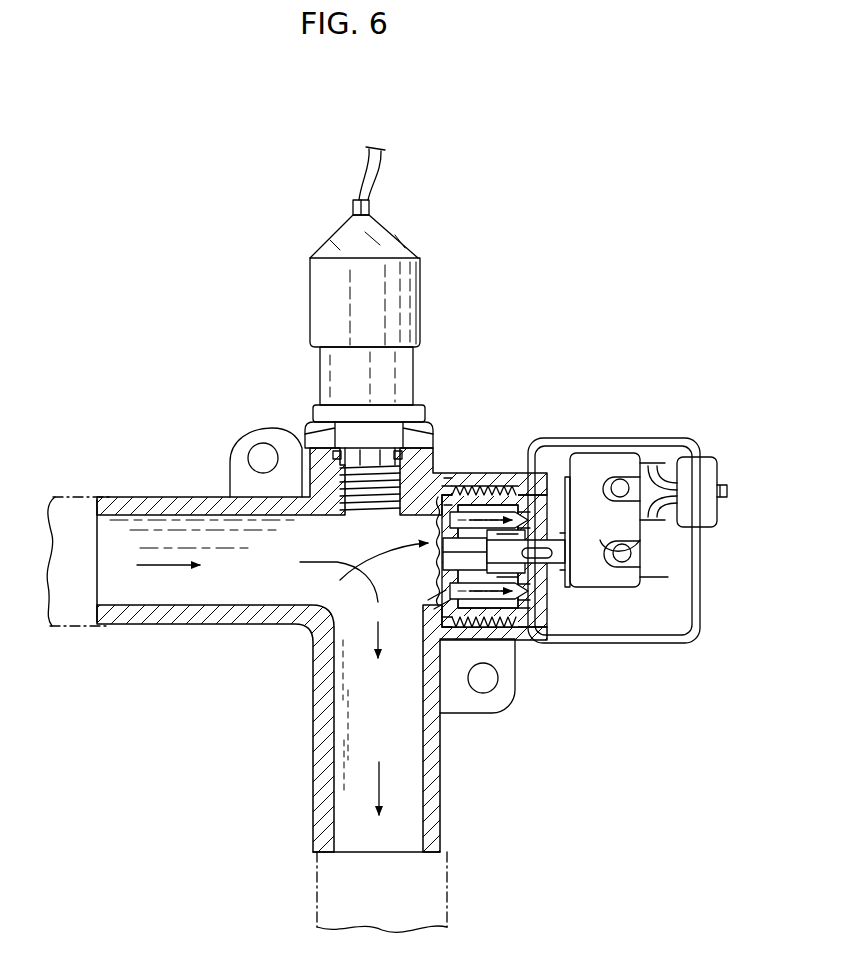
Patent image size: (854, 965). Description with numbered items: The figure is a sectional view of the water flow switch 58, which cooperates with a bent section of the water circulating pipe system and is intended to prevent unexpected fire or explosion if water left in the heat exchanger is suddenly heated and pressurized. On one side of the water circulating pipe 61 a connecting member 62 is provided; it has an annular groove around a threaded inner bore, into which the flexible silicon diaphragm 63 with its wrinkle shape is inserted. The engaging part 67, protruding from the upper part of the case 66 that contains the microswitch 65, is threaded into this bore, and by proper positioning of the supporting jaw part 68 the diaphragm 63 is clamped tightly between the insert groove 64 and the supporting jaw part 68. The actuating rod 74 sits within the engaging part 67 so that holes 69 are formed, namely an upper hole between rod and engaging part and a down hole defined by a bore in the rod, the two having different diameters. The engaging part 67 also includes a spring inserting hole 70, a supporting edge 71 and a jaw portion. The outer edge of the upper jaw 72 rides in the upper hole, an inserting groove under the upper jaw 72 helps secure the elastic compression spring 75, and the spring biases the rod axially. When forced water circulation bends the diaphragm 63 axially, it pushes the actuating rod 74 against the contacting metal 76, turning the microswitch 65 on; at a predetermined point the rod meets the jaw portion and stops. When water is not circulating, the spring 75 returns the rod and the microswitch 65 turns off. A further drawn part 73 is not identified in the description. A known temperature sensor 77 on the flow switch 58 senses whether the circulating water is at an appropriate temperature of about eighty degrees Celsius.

The water flow switch 58 is at (473, 485).
The water circulating pipe 61 is at (447, 810).
The connecting member 62 is at (478, 485).
The flexible silicon diaphragm 63 is at (427, 548).
The insert groove 64 is at (441, 447).
The microswitch 65 is at (631, 643).
The case 66 is at (612, 455).
The engaging part 67 is at (510, 492).
The supporting jaw part 68 is at (459, 470).
The port 69 is at (503, 638).
The spring inserting hole 70 is at (548, 636).
The supporting edge 71 is at (566, 636).
The upper jaw 72 is at (444, 645).
The actuator plate 73 is at (568, 477).
The actuating rod 74 is at (551, 500).
The elastic compression spring 75 is at (530, 635).
The contacting metal 76 is at (571, 530).
The temperature sensor 77 is at (423, 283).